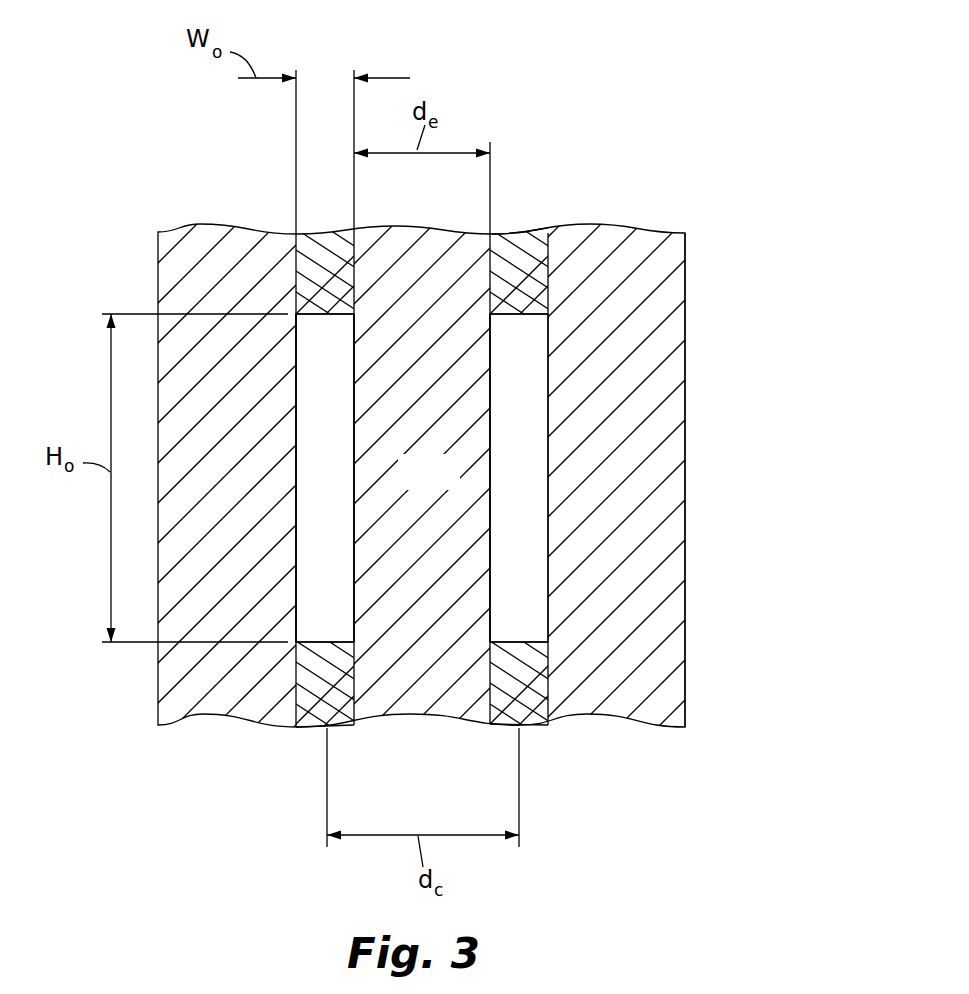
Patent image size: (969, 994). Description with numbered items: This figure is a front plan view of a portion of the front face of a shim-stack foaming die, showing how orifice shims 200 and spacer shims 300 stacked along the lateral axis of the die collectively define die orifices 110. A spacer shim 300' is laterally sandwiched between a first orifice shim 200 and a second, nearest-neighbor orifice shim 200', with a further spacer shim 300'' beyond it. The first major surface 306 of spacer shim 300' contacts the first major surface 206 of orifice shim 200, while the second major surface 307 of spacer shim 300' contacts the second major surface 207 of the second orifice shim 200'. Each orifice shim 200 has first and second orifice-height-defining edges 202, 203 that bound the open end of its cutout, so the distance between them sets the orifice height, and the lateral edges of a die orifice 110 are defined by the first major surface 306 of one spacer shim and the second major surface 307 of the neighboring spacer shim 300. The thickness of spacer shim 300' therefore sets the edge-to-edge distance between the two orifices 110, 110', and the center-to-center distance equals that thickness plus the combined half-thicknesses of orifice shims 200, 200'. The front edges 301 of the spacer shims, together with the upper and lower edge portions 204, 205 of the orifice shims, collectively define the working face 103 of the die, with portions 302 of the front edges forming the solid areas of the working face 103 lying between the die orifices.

The working face 103 is at (730, 236).
The spacer shim 300 is at (435, 435).
The spacer shim 300' is at (422, 440).
The spacer shim 300'' is at (484, 475).
The front edge 301 is at (676, 569).
The portion of front edge 302 is at (452, 484).
The orifice shim 200 is at (245, 475).
The second orifice shim 200' is at (344, 475).
The upper edge portion 204 is at (500, 260).
The first orifice-height-defining edge 202 is at (513, 315).
The second orifice-height-defining edge 203 is at (522, 642).
The lower edge portion 205 is at (530, 720).
The first major surface 206 is at (363, 712).
The second major surface 207 is at (288, 710).
The die orifice 110 is at (325, 478).
The die orifice 110' is at (519, 478).
The second major surface 307 is at (297, 360).
The first major surface 306 is at (353, 583).